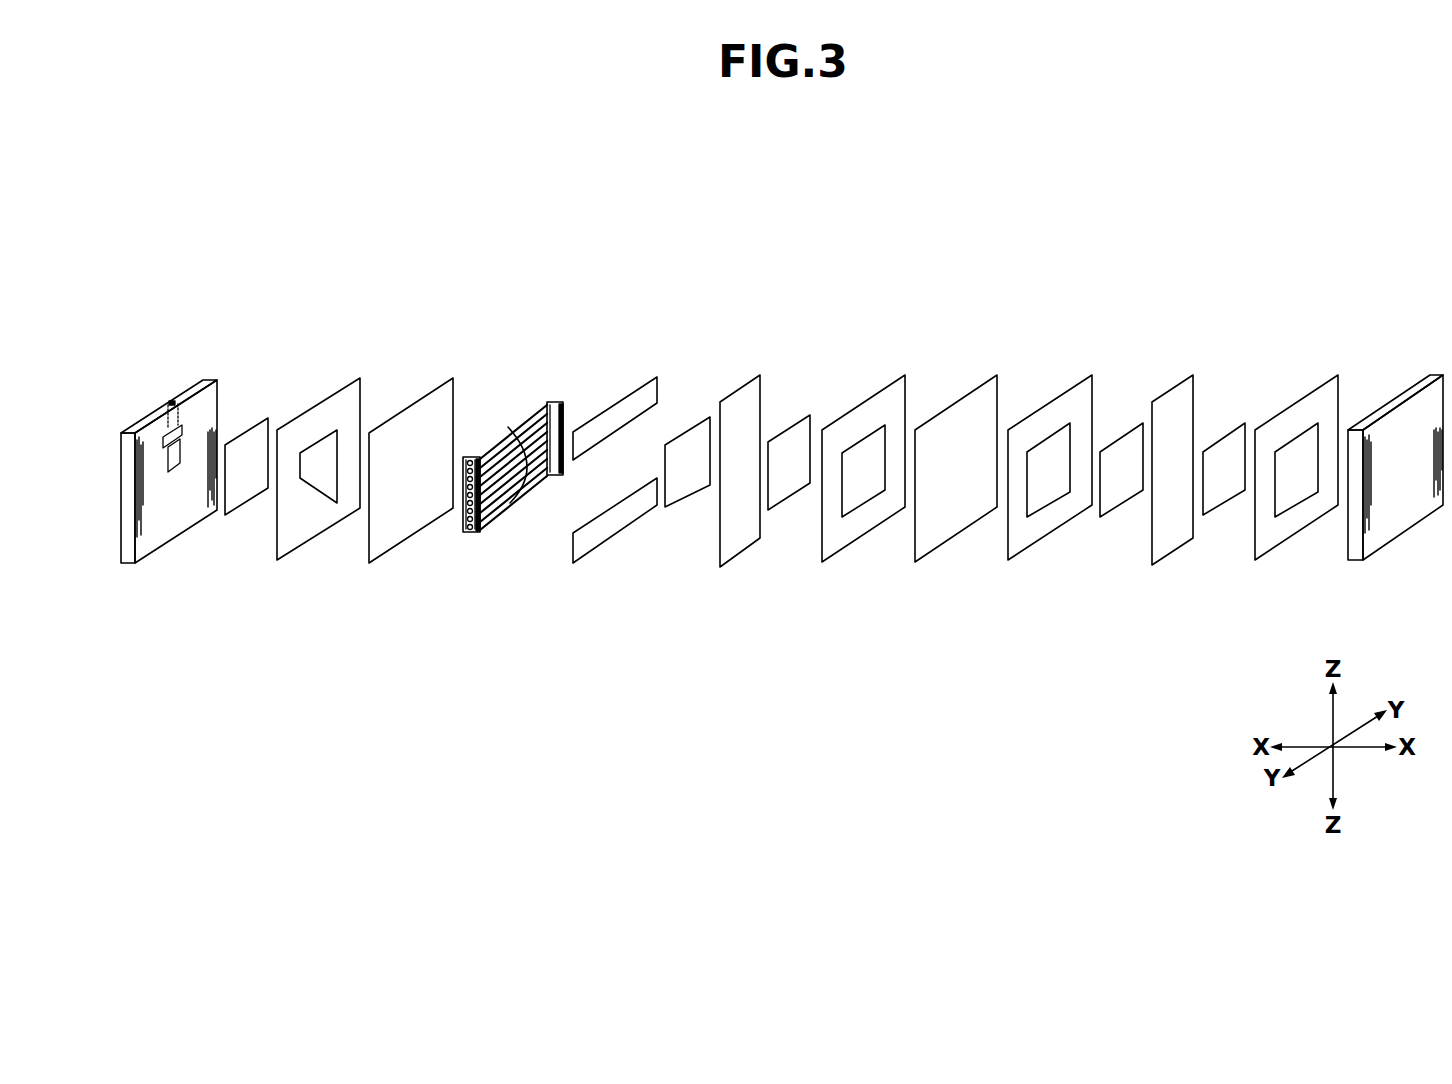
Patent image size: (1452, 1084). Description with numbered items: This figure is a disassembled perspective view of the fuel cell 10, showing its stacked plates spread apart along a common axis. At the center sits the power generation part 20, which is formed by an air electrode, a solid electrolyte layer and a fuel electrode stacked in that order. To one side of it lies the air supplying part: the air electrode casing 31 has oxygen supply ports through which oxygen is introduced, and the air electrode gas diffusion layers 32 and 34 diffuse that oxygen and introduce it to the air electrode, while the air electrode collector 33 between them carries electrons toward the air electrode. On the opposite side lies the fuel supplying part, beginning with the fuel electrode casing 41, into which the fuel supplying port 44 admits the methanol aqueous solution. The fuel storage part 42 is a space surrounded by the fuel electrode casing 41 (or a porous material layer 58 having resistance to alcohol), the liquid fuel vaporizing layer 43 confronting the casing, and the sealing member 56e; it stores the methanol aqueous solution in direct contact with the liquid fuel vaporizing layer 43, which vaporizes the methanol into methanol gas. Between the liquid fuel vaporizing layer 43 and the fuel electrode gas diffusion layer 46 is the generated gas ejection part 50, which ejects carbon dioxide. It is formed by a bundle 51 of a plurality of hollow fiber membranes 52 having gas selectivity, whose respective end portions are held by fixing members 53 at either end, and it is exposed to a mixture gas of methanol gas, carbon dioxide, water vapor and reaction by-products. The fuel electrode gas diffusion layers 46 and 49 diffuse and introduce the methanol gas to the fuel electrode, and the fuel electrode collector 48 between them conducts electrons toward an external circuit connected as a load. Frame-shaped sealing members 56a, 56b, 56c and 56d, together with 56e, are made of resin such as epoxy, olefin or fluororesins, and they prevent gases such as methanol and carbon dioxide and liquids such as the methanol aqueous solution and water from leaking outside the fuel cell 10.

The fuel cell 10 is at (280, 186).
The power generation part 20 is at (957, 413).
The air electrode casing 31 is at (1405, 413).
The air electrode gas diffusion layer 32 is at (1225, 496).
The air electrode collector 33 is at (1167, 415).
The air electrode gas diffusion layer 34 is at (1120, 496).
The fuel electrode casing 41 is at (180, 532).
The fuel storage part 42 is at (320, 456).
The liquid fuel vaporizing layer 43 is at (413, 427).
The fuel supplying port 44 is at (172, 401).
The fuel electrode gas diffusion layer 46 is at (683, 492).
The fuel electrode collector 48 is at (740, 415).
The fuel electrode gas diffusion layer 49 is at (787, 491).
The generated gas ejection part 50 is at (514, 466).
The hollow fiber membrane bundle 51 is at (508, 513).
The hollow fiber membrane 52 is at (528, 420).
The fixing member 53 is at (473, 533).
The sealing member 56a is at (1296, 524).
The sealing member 56b is at (1048, 525).
The sealing member 56c is at (858, 527).
The sealing member 56d is at (613, 415).
The sealing member 56e is at (320, 530).
The porous material layer 58 is at (240, 495).